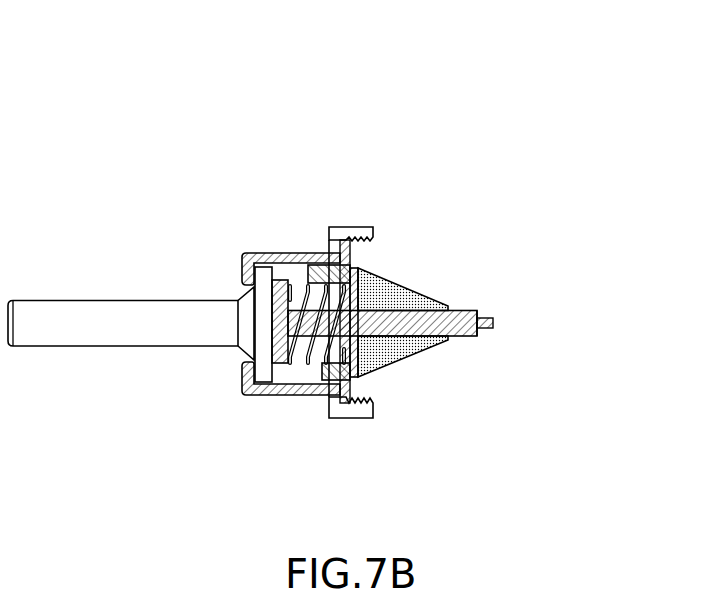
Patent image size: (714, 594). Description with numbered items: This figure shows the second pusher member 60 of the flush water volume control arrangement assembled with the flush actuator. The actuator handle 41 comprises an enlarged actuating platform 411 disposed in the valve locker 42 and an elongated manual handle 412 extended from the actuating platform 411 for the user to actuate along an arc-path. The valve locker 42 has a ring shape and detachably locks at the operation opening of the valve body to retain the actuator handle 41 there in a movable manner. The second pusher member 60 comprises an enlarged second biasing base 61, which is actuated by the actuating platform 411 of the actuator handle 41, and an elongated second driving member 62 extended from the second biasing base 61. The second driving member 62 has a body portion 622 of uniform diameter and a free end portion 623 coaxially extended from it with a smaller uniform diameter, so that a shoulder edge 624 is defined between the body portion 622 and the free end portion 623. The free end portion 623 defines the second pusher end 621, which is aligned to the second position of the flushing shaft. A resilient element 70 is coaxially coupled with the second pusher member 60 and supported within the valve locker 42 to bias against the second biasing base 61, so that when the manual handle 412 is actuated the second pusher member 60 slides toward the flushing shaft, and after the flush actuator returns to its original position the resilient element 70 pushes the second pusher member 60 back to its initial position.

The actuator handle 41 is at (174, 401).
The actuating platform 411 is at (262, 368).
The manual handle 412 is at (96, 327).
The valve locker 42 is at (338, 412).
The second pusher member 60 is at (466, 238).
The second biasing base 61 is at (287, 282).
The second driving member 62 is at (465, 280).
The second pusher end 621 is at (498, 320).
The body portion 622 is at (410, 302).
The free end portion 623 is at (482, 330).
The shoulder edge 624 is at (480, 312).
The resilient element 70 is at (296, 356).